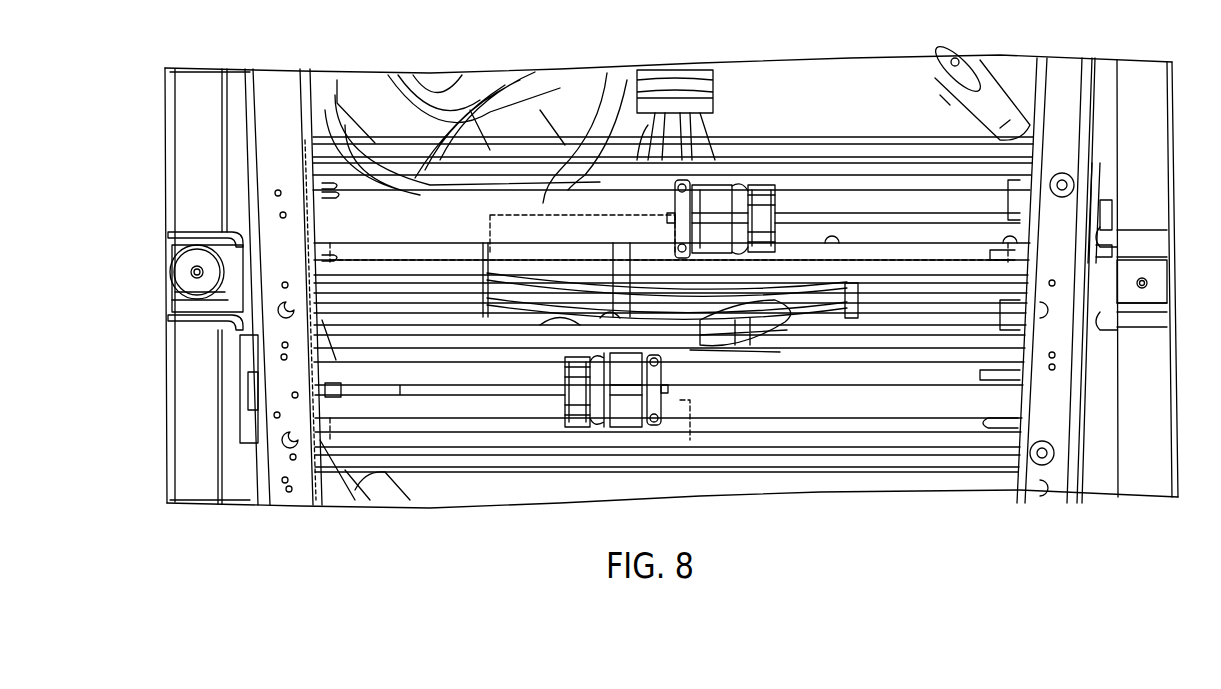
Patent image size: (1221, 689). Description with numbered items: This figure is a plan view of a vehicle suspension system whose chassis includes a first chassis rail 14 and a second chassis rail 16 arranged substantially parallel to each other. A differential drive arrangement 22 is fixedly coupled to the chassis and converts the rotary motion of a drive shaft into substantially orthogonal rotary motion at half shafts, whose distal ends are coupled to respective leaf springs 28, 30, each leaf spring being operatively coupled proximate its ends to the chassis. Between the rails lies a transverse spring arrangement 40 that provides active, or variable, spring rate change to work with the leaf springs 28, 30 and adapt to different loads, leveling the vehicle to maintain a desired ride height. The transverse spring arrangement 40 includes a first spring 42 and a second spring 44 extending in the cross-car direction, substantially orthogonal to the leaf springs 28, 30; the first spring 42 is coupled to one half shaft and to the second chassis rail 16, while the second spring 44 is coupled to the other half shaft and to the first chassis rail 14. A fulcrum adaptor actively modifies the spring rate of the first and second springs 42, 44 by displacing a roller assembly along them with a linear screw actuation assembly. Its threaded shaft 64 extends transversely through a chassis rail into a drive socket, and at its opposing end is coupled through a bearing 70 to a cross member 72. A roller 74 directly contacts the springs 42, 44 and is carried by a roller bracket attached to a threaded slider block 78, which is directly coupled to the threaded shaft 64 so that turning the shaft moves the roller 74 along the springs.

The first chassis rail 14 is at (1060, 68).
The second chassis rail 16 is at (275, 90).
The differential drive arrangement 22 is at (692, 78).
The leaf spring 28 is at (1158, 120).
The leaf spring 30 is at (183, 127).
The transverse spring arrangement 40 is at (815, 128).
The first spring 42 is at (811, 405).
The second spring 44 is at (543, 203).
The threaded shaft 64 is at (470, 390).
The bearing 70 is at (653, 420).
The cross member 72 is at (680, 340).
The roller 74 is at (629, 415).
The threaded slider block 78 is at (576, 393).